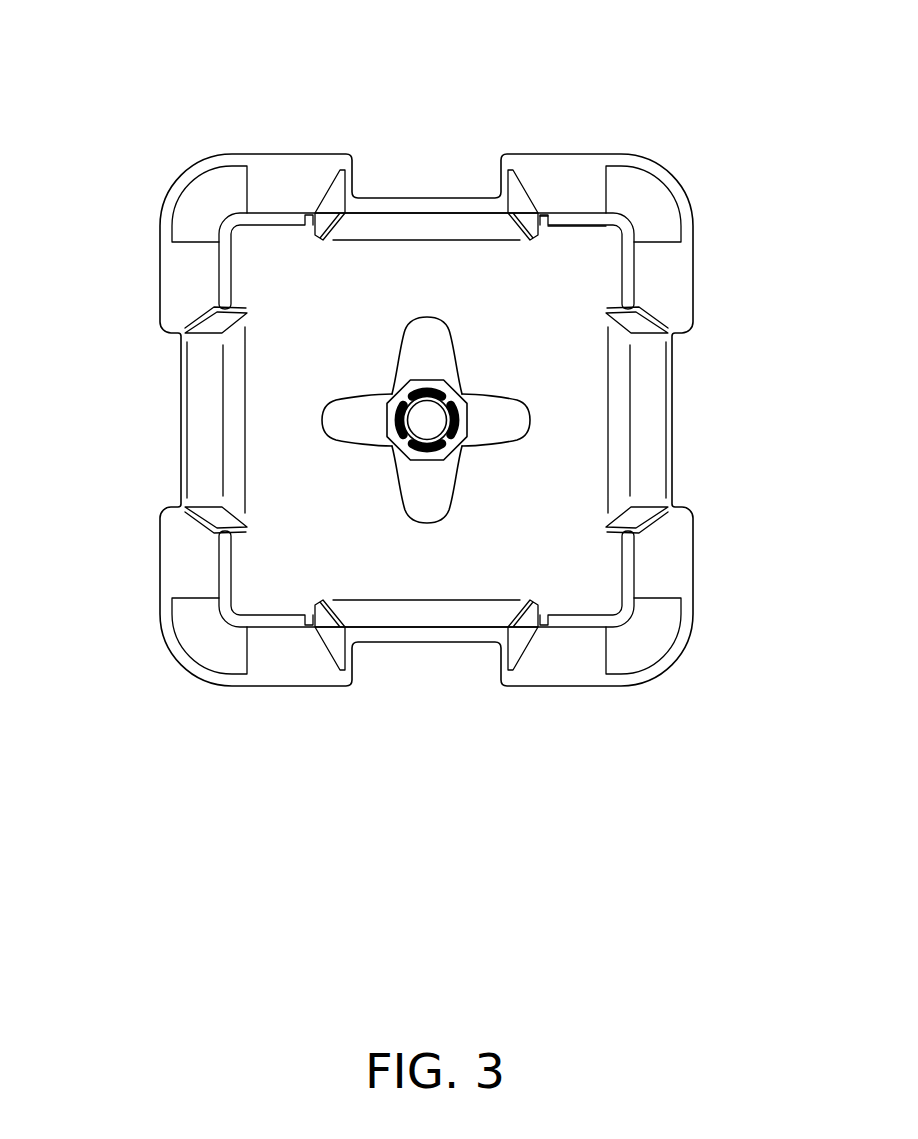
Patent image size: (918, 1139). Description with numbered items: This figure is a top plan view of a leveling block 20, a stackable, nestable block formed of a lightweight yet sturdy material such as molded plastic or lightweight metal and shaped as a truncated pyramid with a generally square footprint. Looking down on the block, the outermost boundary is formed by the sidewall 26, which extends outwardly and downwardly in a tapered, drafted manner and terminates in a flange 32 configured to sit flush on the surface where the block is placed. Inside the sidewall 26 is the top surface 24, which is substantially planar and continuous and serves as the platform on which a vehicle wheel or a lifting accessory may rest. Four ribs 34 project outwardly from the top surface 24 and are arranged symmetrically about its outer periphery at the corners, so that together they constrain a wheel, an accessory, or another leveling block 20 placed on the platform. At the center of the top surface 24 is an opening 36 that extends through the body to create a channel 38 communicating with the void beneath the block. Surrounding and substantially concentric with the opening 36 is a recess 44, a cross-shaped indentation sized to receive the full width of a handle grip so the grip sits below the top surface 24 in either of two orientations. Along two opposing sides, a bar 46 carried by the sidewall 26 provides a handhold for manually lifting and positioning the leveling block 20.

The leveling block 20 is at (138, 96).
The top surface 24 is at (330, 543).
The sidewall 26 is at (393, 227).
The flange 32 is at (675, 195).
The rib 34 is at (587, 222).
The opening 36 is at (428, 419).
The channel 38 is at (453, 383).
The recess 44 is at (345, 416).
The bar 46 is at (203, 426).